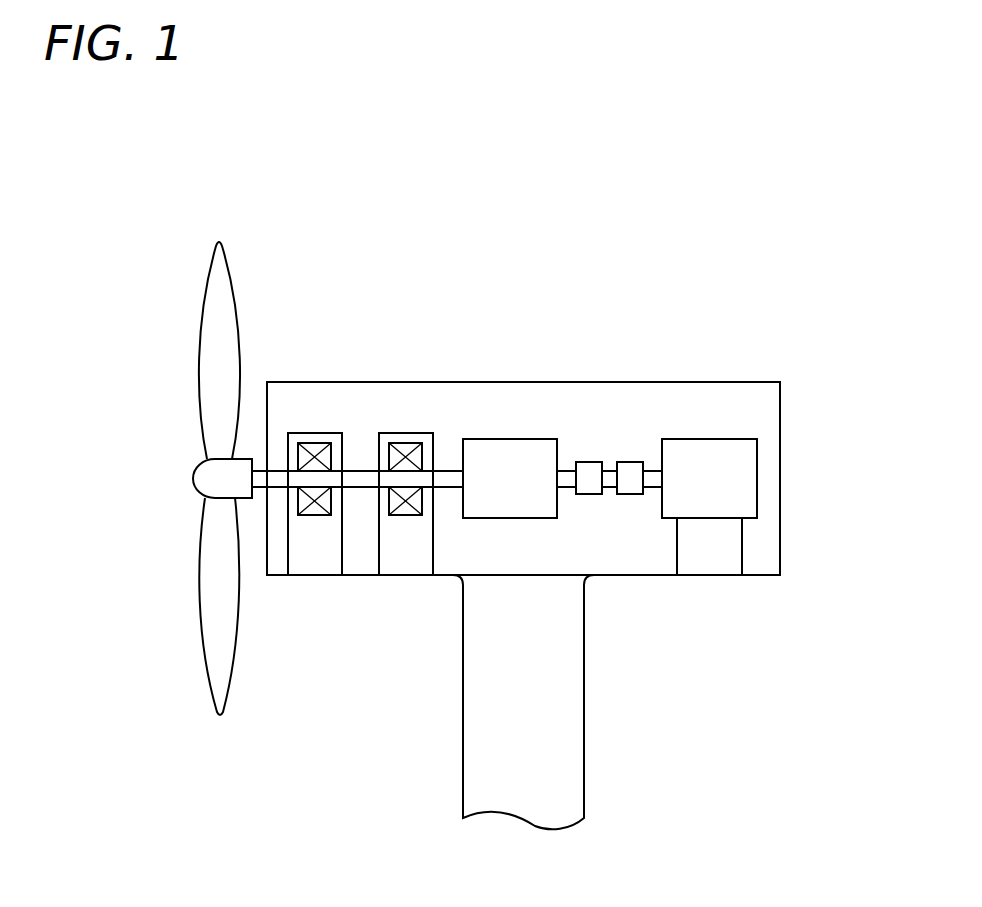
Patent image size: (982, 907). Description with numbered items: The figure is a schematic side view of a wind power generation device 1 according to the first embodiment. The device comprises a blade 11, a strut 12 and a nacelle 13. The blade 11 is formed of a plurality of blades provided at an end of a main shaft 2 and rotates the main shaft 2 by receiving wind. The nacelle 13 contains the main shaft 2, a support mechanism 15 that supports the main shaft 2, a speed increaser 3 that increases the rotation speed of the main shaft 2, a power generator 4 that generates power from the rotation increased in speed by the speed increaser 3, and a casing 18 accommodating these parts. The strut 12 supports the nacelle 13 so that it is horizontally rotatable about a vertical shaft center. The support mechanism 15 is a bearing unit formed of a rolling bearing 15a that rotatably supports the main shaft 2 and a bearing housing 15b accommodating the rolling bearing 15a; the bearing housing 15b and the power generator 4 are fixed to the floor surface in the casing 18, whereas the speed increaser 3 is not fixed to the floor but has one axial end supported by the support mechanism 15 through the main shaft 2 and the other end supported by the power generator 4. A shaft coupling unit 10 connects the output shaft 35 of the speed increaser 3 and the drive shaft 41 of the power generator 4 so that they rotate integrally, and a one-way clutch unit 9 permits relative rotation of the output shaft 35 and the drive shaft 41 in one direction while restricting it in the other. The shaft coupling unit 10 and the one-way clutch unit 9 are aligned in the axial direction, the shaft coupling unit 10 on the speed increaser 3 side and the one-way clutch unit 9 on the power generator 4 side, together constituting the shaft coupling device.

The wind power generation device 1 is at (459, 509).
The blade 11 is at (207, 307).
The strut 12 is at (573, 698).
The nacelle 13 is at (584, 363).
The casing 18 is at (499, 382).
The main shaft 2 is at (363, 470).
The support mechanism 15 is at (357, 455).
The rolling bearing 15a is at (315, 517).
The bearing housing 15b is at (342, 550).
The speed increaser 3 is at (531, 447).
The output shaft 35 is at (568, 488).
The shaft coupling unit 10 is at (590, 462).
The one-way clutch unit 9 is at (630, 462).
The drive shaft 41 is at (650, 488).
The power generator 4 is at (699, 450).